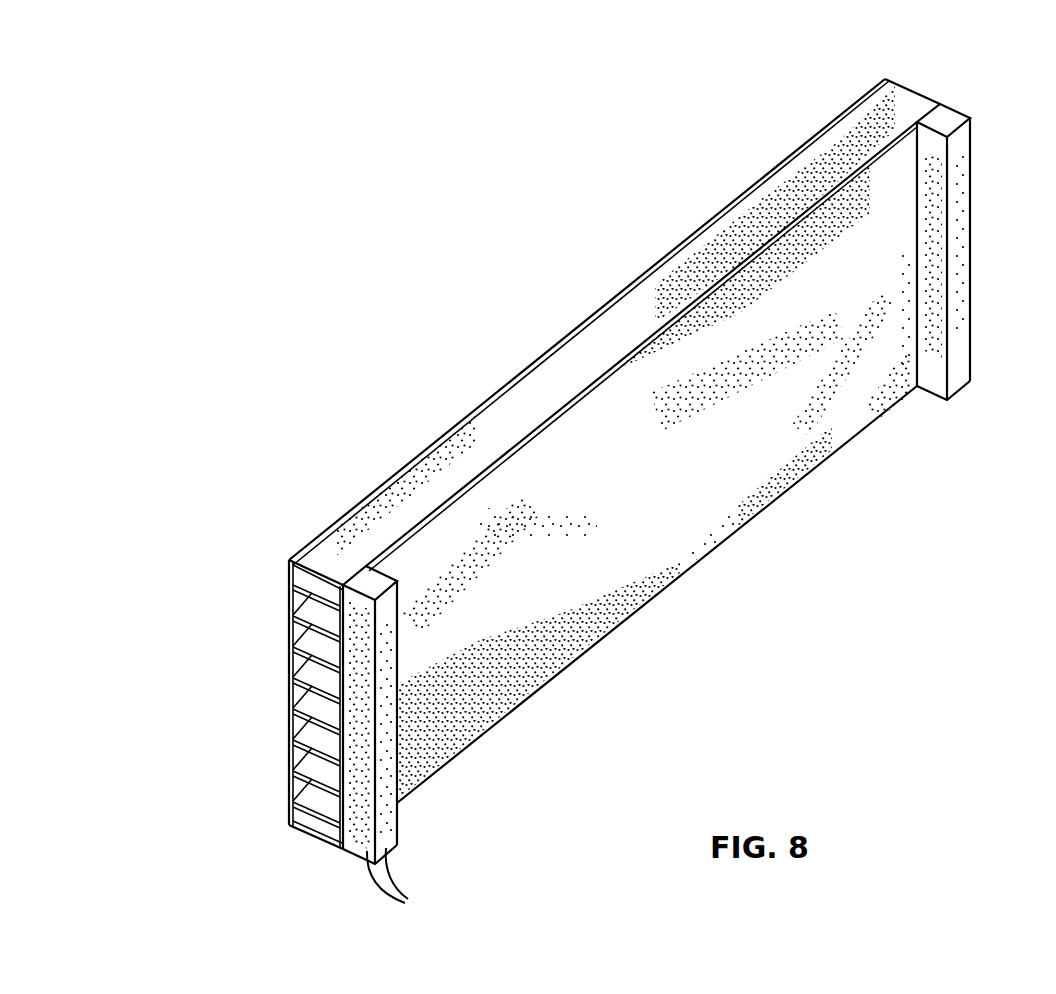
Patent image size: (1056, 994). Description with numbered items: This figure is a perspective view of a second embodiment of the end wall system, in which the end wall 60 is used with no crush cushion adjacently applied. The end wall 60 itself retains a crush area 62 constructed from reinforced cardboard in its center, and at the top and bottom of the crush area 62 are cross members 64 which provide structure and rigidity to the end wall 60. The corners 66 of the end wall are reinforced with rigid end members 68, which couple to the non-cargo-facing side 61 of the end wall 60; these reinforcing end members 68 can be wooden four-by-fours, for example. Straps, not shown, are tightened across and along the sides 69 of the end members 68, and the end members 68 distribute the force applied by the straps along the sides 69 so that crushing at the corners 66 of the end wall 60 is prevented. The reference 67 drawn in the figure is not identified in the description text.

The end wall 60 is at (685, 556).
The non-cargo-facing side 61 is at (647, 494).
The crush area 62 is at (313, 680).
The cross members 64 is at (552, 405).
The corners 66 is at (339, 582).
The vent frame 67 is at (258, 612).
The rigid end members 68 is at (388, 652).
The sides of end members 69 is at (407, 902).